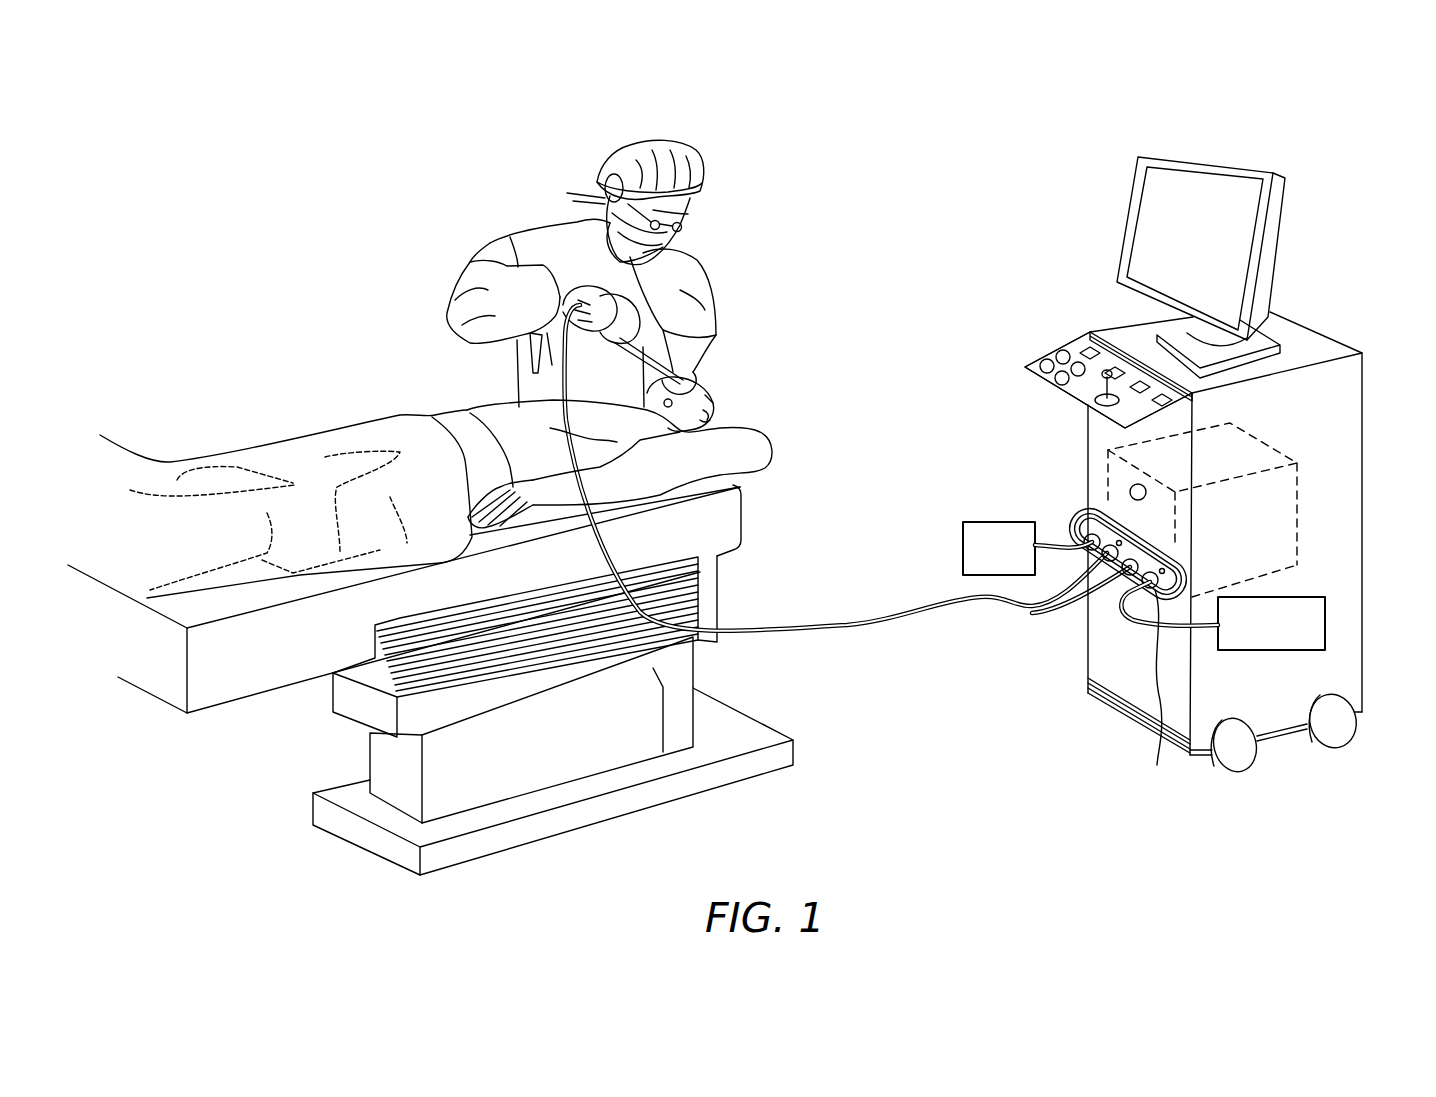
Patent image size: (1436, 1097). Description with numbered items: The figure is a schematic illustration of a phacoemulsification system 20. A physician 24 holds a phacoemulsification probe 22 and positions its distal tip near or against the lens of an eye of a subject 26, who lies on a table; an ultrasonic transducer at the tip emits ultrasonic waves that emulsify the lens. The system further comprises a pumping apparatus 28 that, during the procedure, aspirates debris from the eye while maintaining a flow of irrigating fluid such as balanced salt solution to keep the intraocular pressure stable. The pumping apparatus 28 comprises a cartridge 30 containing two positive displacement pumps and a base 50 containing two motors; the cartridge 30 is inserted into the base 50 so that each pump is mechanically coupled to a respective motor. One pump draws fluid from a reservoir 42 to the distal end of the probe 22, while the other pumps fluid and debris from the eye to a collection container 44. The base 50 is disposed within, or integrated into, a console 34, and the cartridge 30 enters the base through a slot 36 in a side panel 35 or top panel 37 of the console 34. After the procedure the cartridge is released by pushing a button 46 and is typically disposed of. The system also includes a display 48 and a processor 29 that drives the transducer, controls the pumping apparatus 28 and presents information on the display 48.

The phacoemulsification system 20 is at (1231, 237).
The phacoemulsification probe 22 is at (633, 352).
The physician 24 is at (702, 183).
The subject 26 is at (683, 458).
The pumping apparatus 28 is at (1300, 538).
The processor 29 is at (1227, 524).
The cartridge 30 is at (1155, 693).
The console 34 is at (1330, 345).
The side panel 35 is at (1100, 430).
The slot 36 is at (1104, 519).
The top panel 37 is at (1112, 335).
The reservoir 42 is at (963, 548).
The collection container 44 is at (1325, 627).
The button 46 is at (1133, 486).
The display 48 is at (1283, 207).
The base 50 is at (1290, 455).